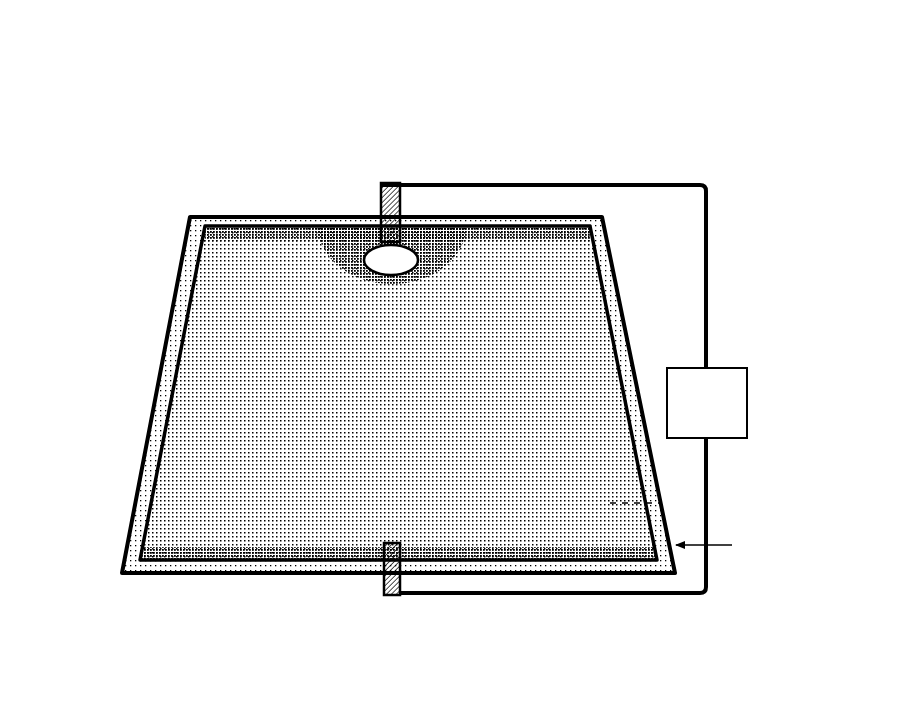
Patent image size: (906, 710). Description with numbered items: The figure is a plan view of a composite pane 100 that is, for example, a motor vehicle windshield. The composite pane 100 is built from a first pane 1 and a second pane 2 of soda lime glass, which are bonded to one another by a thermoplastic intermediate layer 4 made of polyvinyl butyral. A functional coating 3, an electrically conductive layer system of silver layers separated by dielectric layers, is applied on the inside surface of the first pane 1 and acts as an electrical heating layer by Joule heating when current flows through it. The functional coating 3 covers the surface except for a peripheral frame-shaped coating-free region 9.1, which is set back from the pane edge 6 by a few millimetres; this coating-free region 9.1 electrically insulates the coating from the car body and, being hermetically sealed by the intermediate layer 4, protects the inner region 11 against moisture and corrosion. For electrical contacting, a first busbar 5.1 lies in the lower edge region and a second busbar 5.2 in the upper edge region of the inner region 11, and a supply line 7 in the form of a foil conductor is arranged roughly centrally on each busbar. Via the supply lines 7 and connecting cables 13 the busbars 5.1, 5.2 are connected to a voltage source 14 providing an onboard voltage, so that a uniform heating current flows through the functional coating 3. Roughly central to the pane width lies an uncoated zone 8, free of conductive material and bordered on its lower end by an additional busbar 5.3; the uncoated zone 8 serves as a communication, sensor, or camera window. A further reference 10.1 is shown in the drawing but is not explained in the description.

The composite pane 100 is at (160, 90).
The first pane 1 is at (440, 356).
The second pane 2 is at (440, 356).
The thermoplastic intermediate layer 4 is at (440, 356).
The functional coating 3 is at (170, 390).
The first busbar 5.1 is at (220, 550).
The second busbar 5.2 is at (600, 224).
The additional busbar 5.3 is at (437, 260).
The pane edge 6 is at (714, 547).
The supply line 7 is at (393, 185).
The uncoated zone 8 is at (387, 260).
The coating-free region 9.1 is at (623, 328).
The outer frame 10.1 is at (638, 357).
The inner region 11 is at (585, 315).
The connecting cables 13 is at (683, 185).
The voltage source 14 is at (747, 402).